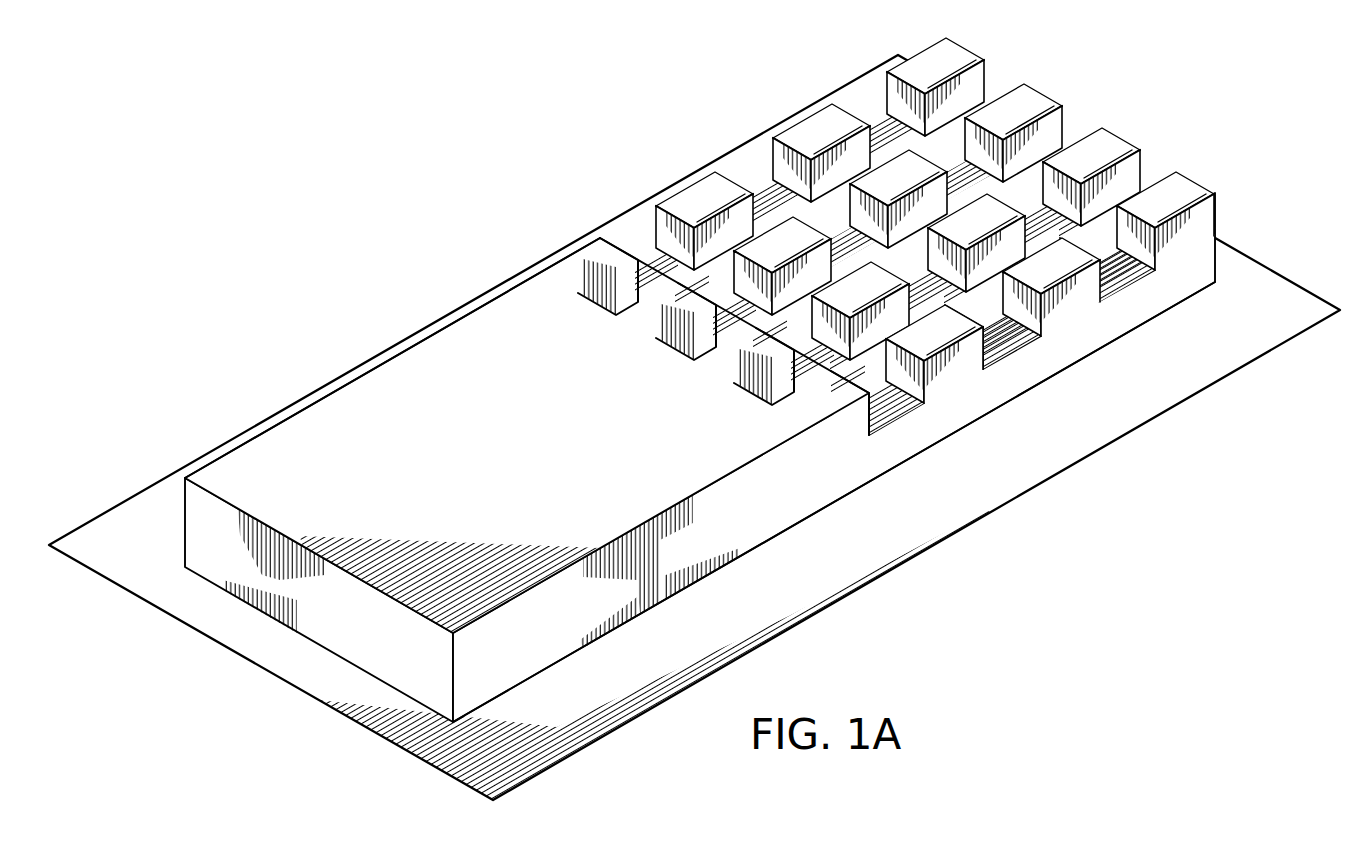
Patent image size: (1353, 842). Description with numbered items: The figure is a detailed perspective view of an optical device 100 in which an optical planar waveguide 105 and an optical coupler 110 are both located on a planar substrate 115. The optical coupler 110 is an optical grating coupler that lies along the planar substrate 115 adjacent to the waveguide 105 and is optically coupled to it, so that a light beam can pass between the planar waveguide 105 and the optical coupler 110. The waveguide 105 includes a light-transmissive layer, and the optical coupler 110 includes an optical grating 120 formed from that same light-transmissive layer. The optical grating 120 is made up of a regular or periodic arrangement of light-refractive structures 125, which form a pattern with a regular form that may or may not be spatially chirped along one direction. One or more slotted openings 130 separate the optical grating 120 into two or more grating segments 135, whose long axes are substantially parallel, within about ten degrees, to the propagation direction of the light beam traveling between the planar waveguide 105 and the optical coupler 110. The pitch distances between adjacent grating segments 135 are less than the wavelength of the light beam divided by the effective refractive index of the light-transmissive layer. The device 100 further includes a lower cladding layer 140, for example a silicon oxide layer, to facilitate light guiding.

The optical device 100 is at (694, 406).
The optical planar waveguide 105 is at (328, 360).
The optical coupler 110 is at (904, 304).
The planar substrate 115 is at (918, 548).
The optical grating 120 is at (752, 125).
The light-refractive structures 125 is at (1212, 155).
The slotted openings 130 is at (998, 66).
The grating segments 135 is at (958, 36).
The lower cladding layer 140 is at (108, 516).